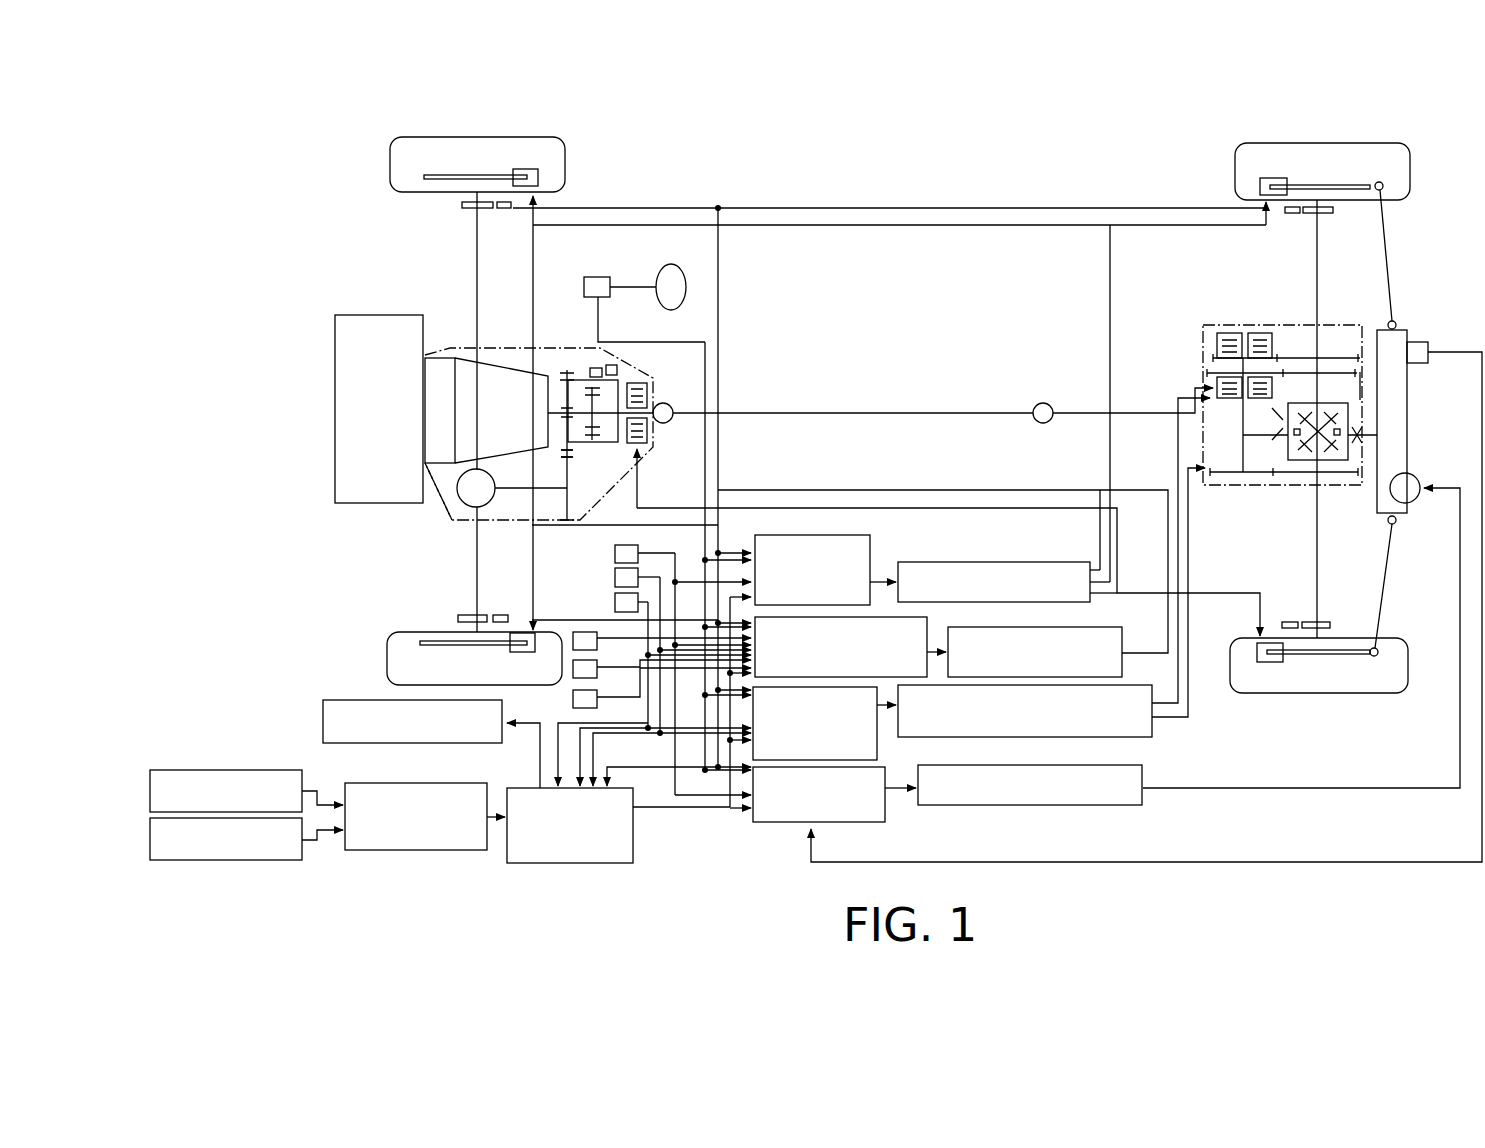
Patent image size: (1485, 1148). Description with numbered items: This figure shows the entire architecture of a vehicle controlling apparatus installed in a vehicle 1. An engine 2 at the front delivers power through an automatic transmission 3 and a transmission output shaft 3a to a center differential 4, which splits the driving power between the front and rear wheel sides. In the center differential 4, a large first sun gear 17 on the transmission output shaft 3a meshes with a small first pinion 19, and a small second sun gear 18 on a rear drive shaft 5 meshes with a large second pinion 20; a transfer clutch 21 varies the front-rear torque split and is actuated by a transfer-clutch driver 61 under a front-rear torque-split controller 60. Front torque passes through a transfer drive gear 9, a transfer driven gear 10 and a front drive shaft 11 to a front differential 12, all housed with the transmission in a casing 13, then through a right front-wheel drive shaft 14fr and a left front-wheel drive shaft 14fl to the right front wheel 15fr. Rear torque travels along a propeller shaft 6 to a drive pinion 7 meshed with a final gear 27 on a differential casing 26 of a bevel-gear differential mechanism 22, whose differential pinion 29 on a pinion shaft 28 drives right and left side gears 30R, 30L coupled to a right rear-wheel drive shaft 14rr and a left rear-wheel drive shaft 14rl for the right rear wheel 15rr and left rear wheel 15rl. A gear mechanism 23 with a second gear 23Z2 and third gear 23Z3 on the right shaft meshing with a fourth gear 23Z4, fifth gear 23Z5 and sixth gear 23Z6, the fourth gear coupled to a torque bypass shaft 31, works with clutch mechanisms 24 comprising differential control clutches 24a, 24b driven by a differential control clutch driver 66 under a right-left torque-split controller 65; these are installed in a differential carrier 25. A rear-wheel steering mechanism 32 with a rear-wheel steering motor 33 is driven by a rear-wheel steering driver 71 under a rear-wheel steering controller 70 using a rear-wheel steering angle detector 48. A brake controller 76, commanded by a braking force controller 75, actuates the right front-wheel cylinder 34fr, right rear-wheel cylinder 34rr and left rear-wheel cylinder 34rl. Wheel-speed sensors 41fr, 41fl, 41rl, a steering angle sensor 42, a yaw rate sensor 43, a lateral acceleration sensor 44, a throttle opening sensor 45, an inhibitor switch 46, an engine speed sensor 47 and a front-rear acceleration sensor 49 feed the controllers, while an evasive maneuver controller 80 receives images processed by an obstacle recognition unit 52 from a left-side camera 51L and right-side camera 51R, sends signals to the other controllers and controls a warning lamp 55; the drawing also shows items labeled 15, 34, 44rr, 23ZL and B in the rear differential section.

The vehicle 1 is at (858, 150).
The engine 2 is at (381, 315).
The automatic transmission 3 is at (470, 358).
The transmission output shaft 3a is at (551, 355).
The center differential 4 is at (553, 355).
The rear drive shaft 5 is at (648, 408).
The propeller shaft 6 is at (862, 412).
The drive pinion 7 is at (1078, 412).
The transfer drive gear 9 is at (567, 372).
The transfer driven gear 10 is at (563, 455).
The front drive shaft 11 is at (515, 492).
The front differential 12 is at (468, 507).
The casing 13 is at (440, 507).
The right front-wheel drive shaft 14fr is at (477, 240).
The left front-wheel drive shaft 14fl is at (475, 597).
The right rear-wheel drive shaft 14rr is at (1319, 240).
The left rear-wheel drive shaft 14rl is at (1320, 578).
The right front wheel 15fr is at (390, 160).
The right rear wheel 15rr is at (1411, 172).
The left rear wheel 15rl is at (1370, 695).
The transfer gear unit 15 is at (578, 442).
The first sun gear 17 is at (603, 482).
The second sun gear 18 is at (624, 427).
The first pinion 19 is at (596, 368).
The second pinion 20 is at (612, 364).
The transfer clutch 21 is at (657, 357).
The bevel-gear differential mechanism 22 is at (1427, 482).
The gear mechanism 23 is at (1338, 343).
The second gear 23Z2 is at (1393, 320).
The third gear 23Z3 is at (1360, 372).
The fourth gear 23Z4 is at (1210, 476).
The fifth gear 23Z5 is at (1200, 398).
The sixth gear 23Z6 is at (1213, 345).
The left output gear 23ZL is at (1362, 448).
The clutch mechanisms 24 is at (1042, 288).
The differential control clutch 24a is at (1185, 322).
The differential control clutch 24b is at (1128, 403).
The differential carrier 25 is at (1278, 324).
The differential casing 26 is at (1352, 418).
The final gear 27 is at (1356, 437).
The pinion shaft 28 is at (1310, 452).
The differential pinion 29 is at (1348, 430).
The right side gear 30R is at (1335, 404).
The left side gear 30L is at (1330, 462).
The torque bypass shaft 31 is at (1243, 440).
The rear-wheel steering mechanism 32 is at (1417, 327).
The rear-wheel steering motor 33 is at (1418, 502).
The front left brake 34 is at (527, 653).
The right front-wheel cylinder 34fr is at (527, 170).
The right rear-wheel cylinder 34rr is at (1272, 178).
The left rear-wheel cylinder 34rl is at (1268, 664).
The wheel-speed sensor 41fr is at (505, 208).
The wheel-speed sensor 41fl is at (498, 613).
The wheel-speed sensor 41rl is at (1300, 620).
The steering angle sensor 42 is at (596, 277).
The yaw rate sensor 43 is at (614, 552).
The lateral acceleration sensor 44 is at (614, 577).
The rear right wheel speed sensor 44rr is at (1291, 214).
The throttle opening sensor 45 is at (598, 647).
The inhibitor switch 46 is at (598, 676).
The engine speed sensor 47 is at (598, 706).
The rear-wheel steering angle detector 48 is at (1429, 350).
The front-rear acceleration sensor 49 is at (614, 602).
The right-side camera 51R is at (192, 770).
The left-side camera 51L is at (185, 861).
The obstacle recognition unit 52 is at (366, 783).
The warning lamp 55 is at (323, 712).
The front-rear torque-split controller 60 is at (928, 627).
The transfer-clutch driver 61 is at (1124, 641).
The right-left torque-split controller 65 is at (878, 735).
The differential control clutch driver 66 is at (1128, 686).
The rear-wheel steering controller 70 is at (893, 806).
The rear-wheel steering driver 71 is at (998, 766).
The braking force controller 75 is at (872, 566).
The brake controller 76 is at (1025, 562).
The evasive maneuver controller 80 is at (636, 822).
The rear differential section B is at (1243, 297).